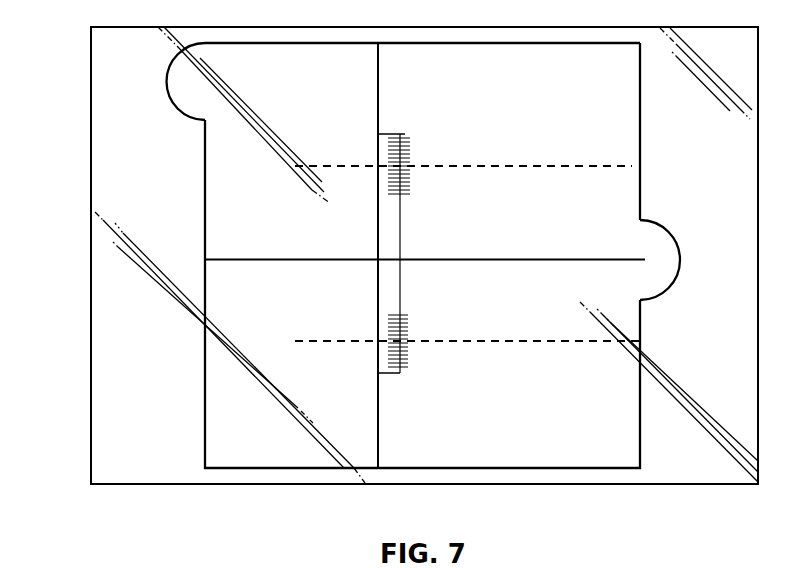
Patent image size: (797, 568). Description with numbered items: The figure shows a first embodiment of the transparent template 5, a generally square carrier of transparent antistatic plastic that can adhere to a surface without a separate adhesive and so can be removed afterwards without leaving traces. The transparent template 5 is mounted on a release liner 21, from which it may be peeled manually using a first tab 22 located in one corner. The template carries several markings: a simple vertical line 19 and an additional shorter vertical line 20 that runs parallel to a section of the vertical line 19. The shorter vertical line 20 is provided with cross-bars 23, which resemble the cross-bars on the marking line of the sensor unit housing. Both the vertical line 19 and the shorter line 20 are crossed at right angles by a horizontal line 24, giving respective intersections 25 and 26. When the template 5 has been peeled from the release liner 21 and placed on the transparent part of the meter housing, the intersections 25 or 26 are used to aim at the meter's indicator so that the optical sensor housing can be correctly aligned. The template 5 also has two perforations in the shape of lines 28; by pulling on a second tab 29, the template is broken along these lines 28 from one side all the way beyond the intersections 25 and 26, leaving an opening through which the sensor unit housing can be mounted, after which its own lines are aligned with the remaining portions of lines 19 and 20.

The transparent template 5 is at (386, 255).
The vertical line 19 is at (378, 78).
The additional shorter vertical line 20 is at (400, 293).
The release liner 21 is at (117, 109).
The first tab 22 is at (168, 70).
The cross-bars 23 is at (405, 134).
The horizontal line 24 is at (248, 259).
The intersection 25 is at (370, 260).
The intersection 26 is at (400, 259).
The perforation lines 28 is at (628, 165).
The second tab 29 is at (667, 228).